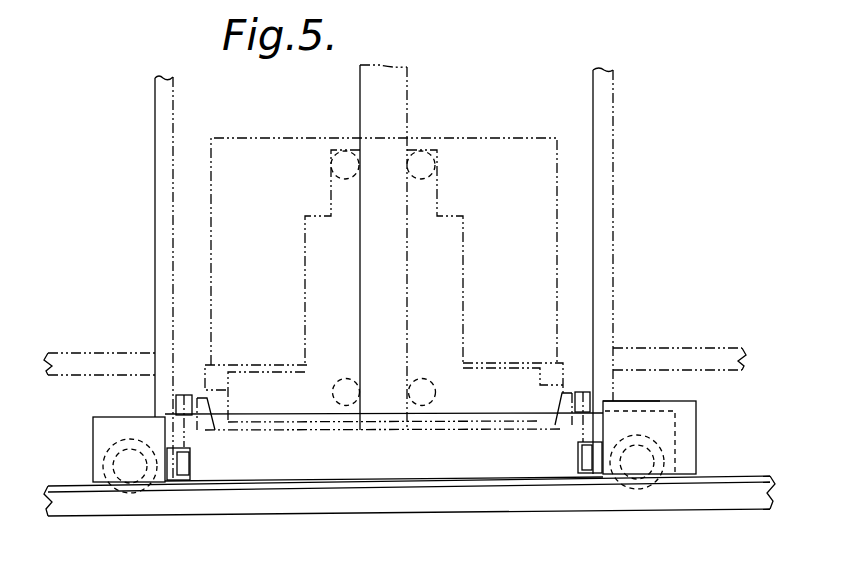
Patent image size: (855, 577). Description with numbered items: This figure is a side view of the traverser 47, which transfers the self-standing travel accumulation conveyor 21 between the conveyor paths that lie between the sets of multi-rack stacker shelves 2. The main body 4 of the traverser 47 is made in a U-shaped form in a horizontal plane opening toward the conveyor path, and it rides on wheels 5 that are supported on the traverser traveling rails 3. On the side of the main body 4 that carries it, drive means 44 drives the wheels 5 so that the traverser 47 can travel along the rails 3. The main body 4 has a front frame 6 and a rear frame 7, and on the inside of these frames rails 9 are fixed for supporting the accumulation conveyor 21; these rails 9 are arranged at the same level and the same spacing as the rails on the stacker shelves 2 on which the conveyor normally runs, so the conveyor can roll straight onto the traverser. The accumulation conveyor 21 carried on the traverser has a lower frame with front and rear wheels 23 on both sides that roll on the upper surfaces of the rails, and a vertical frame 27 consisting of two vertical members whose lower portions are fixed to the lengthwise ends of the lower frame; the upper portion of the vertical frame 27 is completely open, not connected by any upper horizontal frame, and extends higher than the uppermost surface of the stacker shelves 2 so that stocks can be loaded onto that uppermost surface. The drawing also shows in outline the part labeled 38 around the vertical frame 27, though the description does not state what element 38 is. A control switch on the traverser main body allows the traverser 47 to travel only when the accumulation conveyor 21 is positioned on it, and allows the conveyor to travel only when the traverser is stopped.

The multi-rack stacker shelves 2 is at (145, 262).
The traverser traveling rails 3 is at (180, 500).
The main body 4 is at (118, 417).
The wheels 5 is at (130, 493).
The front frame 6 is at (630, 412).
The rear frame 7 is at (93, 435).
The rails 9 is at (188, 464).
The accumulation conveyor 21 is at (308, 289).
The front and rear wheels 23 is at (186, 394).
The vertical frame 27 is at (400, 100).
The frame 38 is at (510, 147).
The drive means 44 is at (687, 430).
The traverser 47 is at (677, 390).